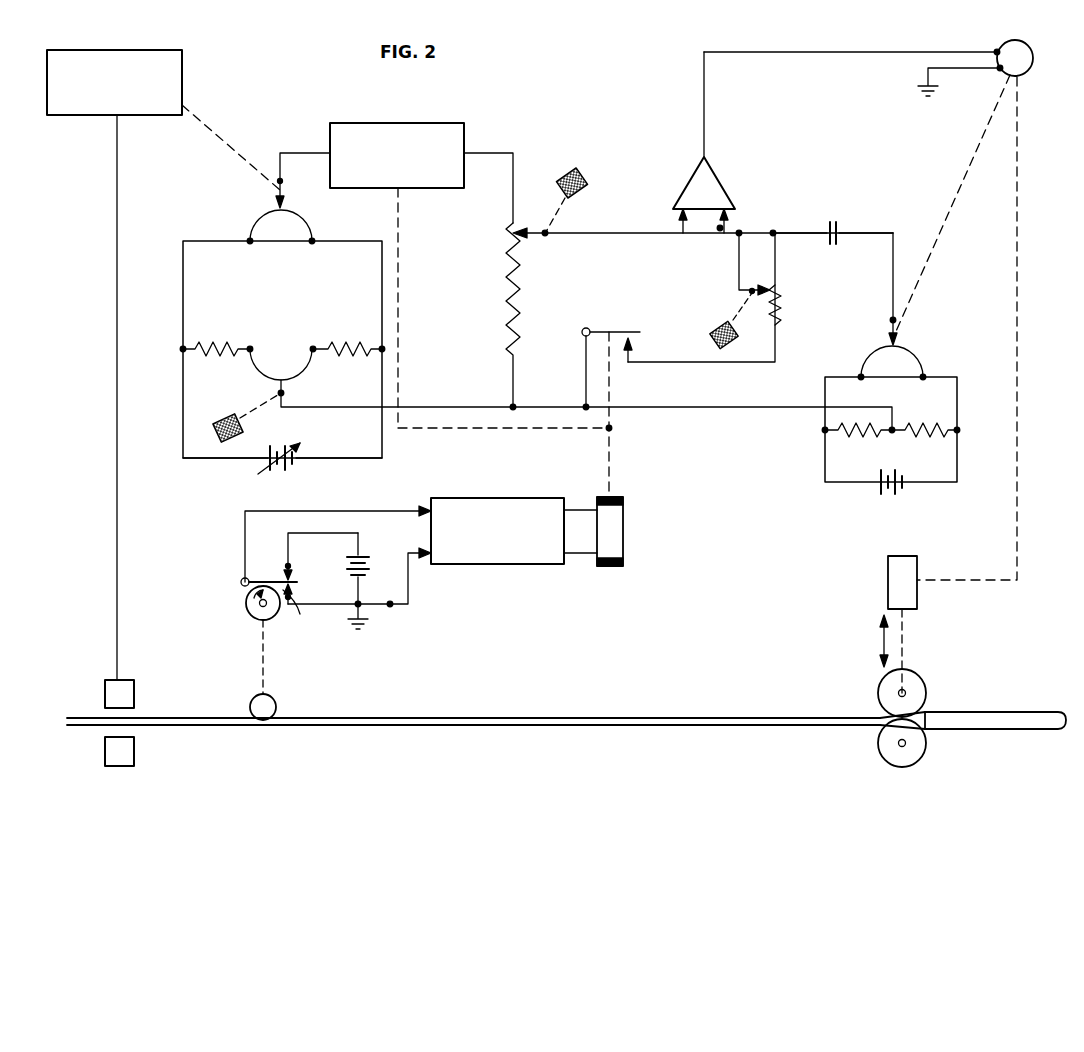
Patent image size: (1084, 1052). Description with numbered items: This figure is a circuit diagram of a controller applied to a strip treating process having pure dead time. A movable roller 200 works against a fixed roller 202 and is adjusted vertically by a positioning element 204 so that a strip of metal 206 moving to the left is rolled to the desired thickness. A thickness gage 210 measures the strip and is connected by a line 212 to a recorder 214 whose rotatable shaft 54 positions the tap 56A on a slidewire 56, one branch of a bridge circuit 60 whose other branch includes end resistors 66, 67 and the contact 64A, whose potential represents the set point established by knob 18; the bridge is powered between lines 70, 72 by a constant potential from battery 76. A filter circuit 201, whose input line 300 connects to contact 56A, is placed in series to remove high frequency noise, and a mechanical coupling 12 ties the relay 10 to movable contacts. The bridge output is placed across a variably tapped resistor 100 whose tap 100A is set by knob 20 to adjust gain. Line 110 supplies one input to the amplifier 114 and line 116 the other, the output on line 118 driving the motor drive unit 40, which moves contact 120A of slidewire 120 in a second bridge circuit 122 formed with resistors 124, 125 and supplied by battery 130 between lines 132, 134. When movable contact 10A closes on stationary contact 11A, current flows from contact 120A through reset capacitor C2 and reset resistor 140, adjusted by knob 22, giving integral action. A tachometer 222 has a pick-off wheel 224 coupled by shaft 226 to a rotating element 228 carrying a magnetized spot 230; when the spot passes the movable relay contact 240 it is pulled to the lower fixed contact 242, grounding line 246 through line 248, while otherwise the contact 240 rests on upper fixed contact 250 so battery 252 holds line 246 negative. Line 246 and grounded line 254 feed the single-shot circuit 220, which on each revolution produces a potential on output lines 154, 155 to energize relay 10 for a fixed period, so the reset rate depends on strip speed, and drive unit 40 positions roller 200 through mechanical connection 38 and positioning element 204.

The recorder 214 is at (105, 50).
The line 212 is at (117, 330).
The thickness gage 210 is at (105, 695).
The strip of metal 206 is at (660, 717).
The rotatable shaft 54 is at (228, 130).
The input line 300 is at (300, 153).
The tap 56A is at (276, 192).
The slidewire 56 is at (302, 220).
The bridge circuit 60 is at (283, 295).
The line 70 is at (183, 400).
The line 72 is at (375, 443).
The end resistor 66 is at (218, 340).
The end resistor 67 is at (350, 340).
The contact 64A is at (286, 393).
The knob 18 is at (224, 415).
The battery 76 is at (285, 448).
The filter circuit 201 is at (420, 123).
The mechanical coupling 12 is at (400, 320).
The variably tapped resistor 100 is at (508, 280).
The tap 100A is at (548, 240).
The knob 20 is at (565, 175).
The movable contact 10A is at (592, 328).
The stationary contact 11A is at (635, 355).
The controller amplifier 114 is at (690, 175).
The line 110 is at (655, 233).
The line 116 is at (730, 228).
The reset resistor 140 is at (780, 300).
The knob 22 is at (716, 328).
The reset capacitor C2 is at (833, 221).
The contact 120A is at (897, 322).
The slidewire 120 is at (910, 358).
The second bridge circuit 122 is at (891, 429).
The resistor 124 is at (862, 440).
The resistor 125 is at (935, 440).
The battery 130 is at (890, 498).
The line 132 is at (825, 462).
The line 134 is at (957, 470).
The motor drive unit 40 is at (1005, 42).
The line 118 is at (815, 50).
The mechanical connection 38 is at (1012, 205).
The positioning element 204 is at (888, 578).
The movable roller 200 is at (925, 680).
The fixed roller 202 is at (878, 748).
The single-shot circuit 220 is at (500, 498).
The output line 154 is at (575, 508).
The output line 155 is at (585, 555).
The relay 10 is at (625, 525).
The line 246 is at (245, 530).
The movable relay contact 240 is at (258, 578).
The upper fixed contact 250 is at (292, 560).
The lower fixed contact 242 is at (292, 590).
The battery 252 is at (375, 565).
The line 254 is at (390, 606).
The line 248 is at (340, 615).
The magnetized spot 230 is at (286, 602).
The rotating element 228 is at (246, 612).
The shaft 226 is at (260, 648).
The pick-off wheel 224 is at (274, 702).
The tachometer 222 is at (369, 674).